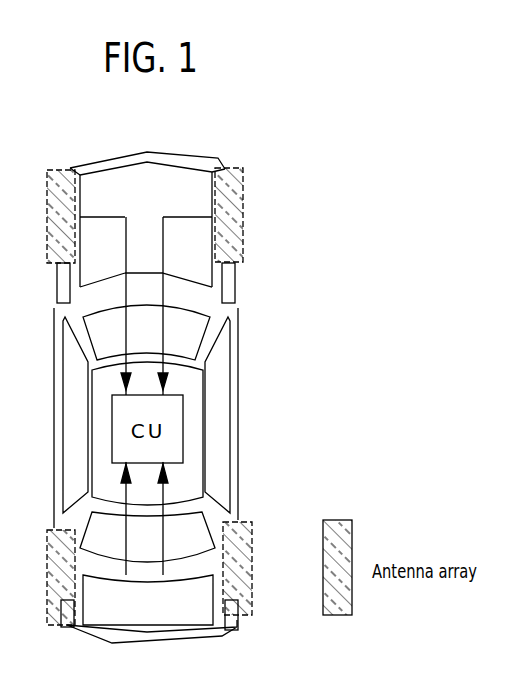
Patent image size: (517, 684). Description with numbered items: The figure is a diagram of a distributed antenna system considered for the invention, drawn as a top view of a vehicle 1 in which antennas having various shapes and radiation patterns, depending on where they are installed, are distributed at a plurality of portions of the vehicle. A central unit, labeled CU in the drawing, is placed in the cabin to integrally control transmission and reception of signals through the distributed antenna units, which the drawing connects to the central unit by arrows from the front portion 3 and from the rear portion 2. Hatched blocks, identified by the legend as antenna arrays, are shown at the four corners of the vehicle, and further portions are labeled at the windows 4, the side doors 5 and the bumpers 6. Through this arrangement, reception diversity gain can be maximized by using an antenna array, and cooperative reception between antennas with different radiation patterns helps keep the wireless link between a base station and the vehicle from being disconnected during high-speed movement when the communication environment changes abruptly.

The vehicle 1 is at (144, 401).
The rear antenna unit (trunk area) 2 is at (148, 543).
The front antenna unit (dashboard area) 3 is at (146, 306).
The window 4 is at (147, 433).
The side door 5 is at (146, 415).
The bumper 6 is at (152, 396).